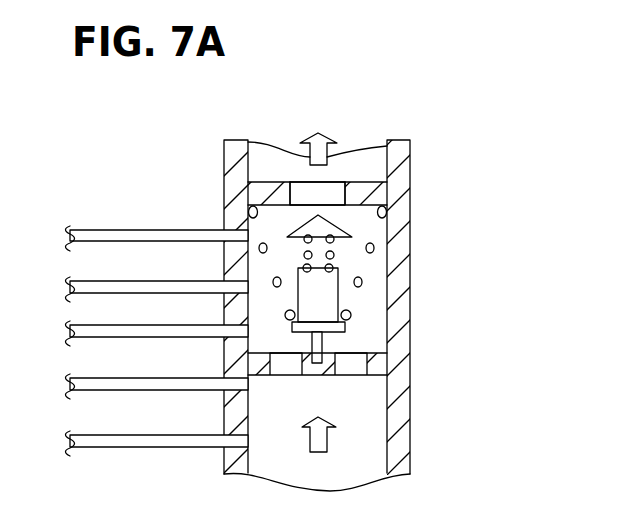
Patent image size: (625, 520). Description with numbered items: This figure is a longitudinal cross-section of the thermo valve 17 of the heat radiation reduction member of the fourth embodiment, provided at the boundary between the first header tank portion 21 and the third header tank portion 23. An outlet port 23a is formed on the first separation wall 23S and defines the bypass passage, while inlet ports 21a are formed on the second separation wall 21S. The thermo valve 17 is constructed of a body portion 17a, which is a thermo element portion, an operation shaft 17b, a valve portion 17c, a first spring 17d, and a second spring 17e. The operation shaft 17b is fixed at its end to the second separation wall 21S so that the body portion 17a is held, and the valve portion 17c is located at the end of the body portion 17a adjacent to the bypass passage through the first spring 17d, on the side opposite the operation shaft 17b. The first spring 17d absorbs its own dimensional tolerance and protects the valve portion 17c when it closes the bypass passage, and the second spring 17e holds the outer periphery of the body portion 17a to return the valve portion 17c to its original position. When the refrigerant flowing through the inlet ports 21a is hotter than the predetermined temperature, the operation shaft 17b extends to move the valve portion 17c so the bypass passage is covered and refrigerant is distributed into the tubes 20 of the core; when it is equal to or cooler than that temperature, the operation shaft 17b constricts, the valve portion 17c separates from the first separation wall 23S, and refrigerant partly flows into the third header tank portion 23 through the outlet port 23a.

The thermo valve 17 is at (425, 280).
The body portion 17a is at (330, 296).
The operation shaft 17b is at (328, 350).
The valve portion 17c is at (330, 222).
The first spring 17d is at (345, 254).
The second spring 17e is at (374, 252).
The tubes 20 is at (142, 232).
The first header tank portion 21 is at (372, 443).
The second separation wall 21S is at (375, 366).
The inlet ports 21a is at (353, 376).
The third header tank portion 23 is at (375, 155).
The first separation wall 23S is at (368, 196).
The outlet port 23a is at (335, 186).